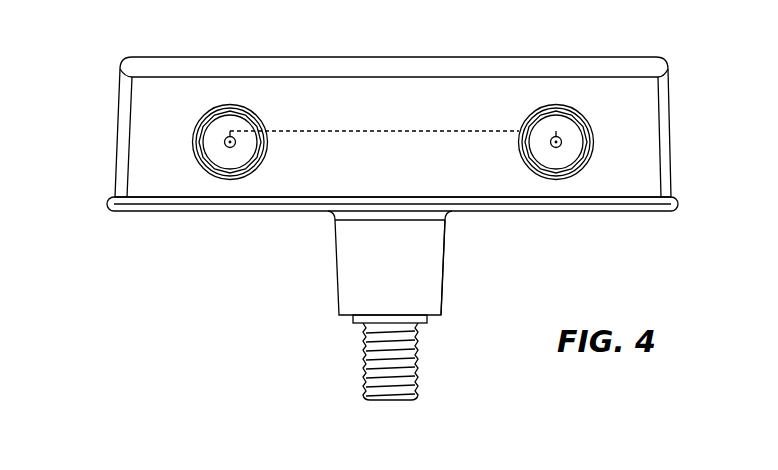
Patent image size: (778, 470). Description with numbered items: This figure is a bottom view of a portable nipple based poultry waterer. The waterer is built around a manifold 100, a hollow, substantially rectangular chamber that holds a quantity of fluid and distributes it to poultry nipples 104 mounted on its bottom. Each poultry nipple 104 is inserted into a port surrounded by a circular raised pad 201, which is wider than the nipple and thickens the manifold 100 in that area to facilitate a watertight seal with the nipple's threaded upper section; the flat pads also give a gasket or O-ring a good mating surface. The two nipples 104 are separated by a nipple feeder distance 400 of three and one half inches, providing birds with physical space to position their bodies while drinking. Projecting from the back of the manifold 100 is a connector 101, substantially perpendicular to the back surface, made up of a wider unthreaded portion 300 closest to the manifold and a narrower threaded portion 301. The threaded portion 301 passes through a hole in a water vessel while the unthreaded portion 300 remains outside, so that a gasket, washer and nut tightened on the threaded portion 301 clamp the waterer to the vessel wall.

The manifold 100 is at (288, 57).
The connector 101 is at (445, 247).
The poultry nipple 104 is at (250, 143).
The raised pad 201 is at (248, 113).
The unthreaded portion 300 is at (433, 278).
The threaded portion 301 is at (418, 355).
The nipple feeder distance 400 is at (390, 131).